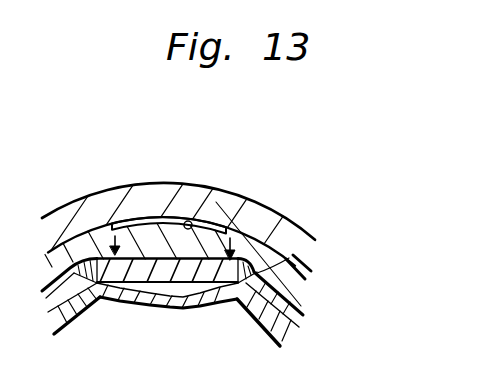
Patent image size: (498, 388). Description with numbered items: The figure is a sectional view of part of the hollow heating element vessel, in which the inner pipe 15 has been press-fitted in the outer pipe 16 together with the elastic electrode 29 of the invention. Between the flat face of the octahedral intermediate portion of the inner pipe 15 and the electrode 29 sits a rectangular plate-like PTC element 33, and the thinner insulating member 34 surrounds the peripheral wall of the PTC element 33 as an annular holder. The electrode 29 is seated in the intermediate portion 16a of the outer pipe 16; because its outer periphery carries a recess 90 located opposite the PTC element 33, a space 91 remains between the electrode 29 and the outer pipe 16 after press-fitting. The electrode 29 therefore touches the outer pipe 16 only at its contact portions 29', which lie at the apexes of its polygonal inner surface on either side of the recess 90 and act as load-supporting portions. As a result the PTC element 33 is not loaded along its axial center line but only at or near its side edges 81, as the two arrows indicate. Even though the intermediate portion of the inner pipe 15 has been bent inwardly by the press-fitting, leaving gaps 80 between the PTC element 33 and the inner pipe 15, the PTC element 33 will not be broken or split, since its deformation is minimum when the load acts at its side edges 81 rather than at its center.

The outer pipe 16 is at (267, 214).
The intermediate portion 16a is at (171, 241).
The elastic electrode 29 is at (138, 210).
The contact portions 29' is at (286, 221).
The spaces 91 is at (157, 218).
The recesses 90 is at (191, 222).
The PTC element 33 is at (230, 232).
The inner pipe 15 is at (145, 306).
The gaps 80 is at (183, 308).
The cover edge 81 is at (94, 300).
The insulating member 34 is at (295, 262).